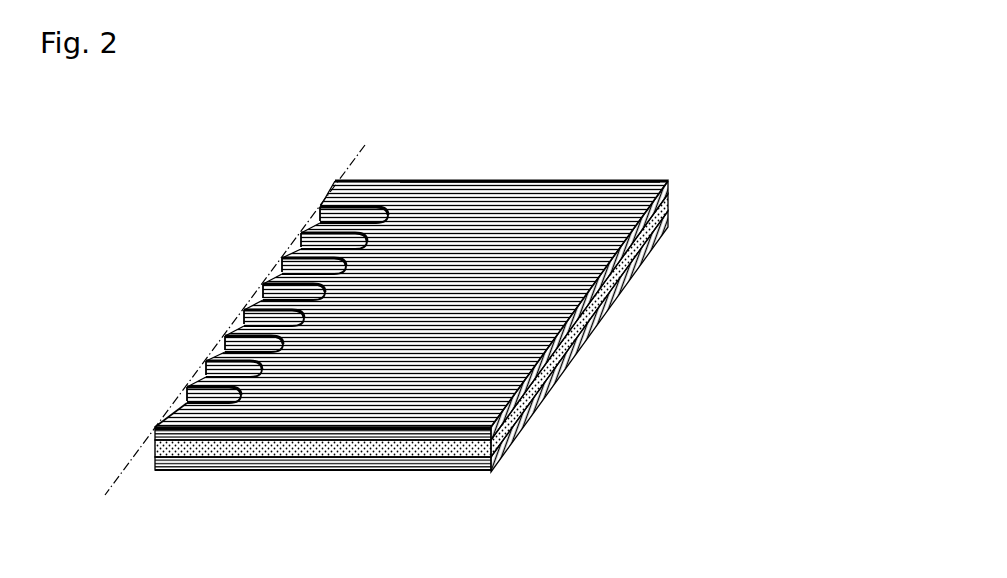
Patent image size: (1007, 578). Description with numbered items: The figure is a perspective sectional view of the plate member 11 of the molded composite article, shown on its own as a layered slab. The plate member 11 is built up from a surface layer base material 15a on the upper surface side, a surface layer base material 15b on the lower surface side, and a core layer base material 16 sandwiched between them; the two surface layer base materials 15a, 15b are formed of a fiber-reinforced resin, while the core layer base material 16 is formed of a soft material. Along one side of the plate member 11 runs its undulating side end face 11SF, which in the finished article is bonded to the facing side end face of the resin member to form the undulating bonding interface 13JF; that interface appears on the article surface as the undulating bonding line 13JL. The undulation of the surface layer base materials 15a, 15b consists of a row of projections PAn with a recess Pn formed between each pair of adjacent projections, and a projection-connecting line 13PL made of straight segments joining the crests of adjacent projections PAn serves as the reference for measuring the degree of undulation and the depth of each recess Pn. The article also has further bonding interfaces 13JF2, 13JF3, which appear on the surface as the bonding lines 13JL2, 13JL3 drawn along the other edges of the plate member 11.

The plate member 11 is at (423, 227).
The undulating side end face 11SF is at (153, 417).
The bonding line 13JL is at (365, 205).
The bonding line 13JL2 is at (590, 287).
The bonding line 13JL3 is at (543, 179).
The bonding interface 13JF is at (200, 368).
The bonding interface 13JF2 is at (578, 331).
The bonding interface 13JF3 is at (600, 176).
The projection-connecting line 13PL is at (306, 228).
The recess Pn is at (282, 257).
The projection PAn is at (264, 283).
The surface layer base material 15a is at (413, 437).
The surface layer base material 15b is at (240, 462).
The core layer base material 16 is at (317, 448).